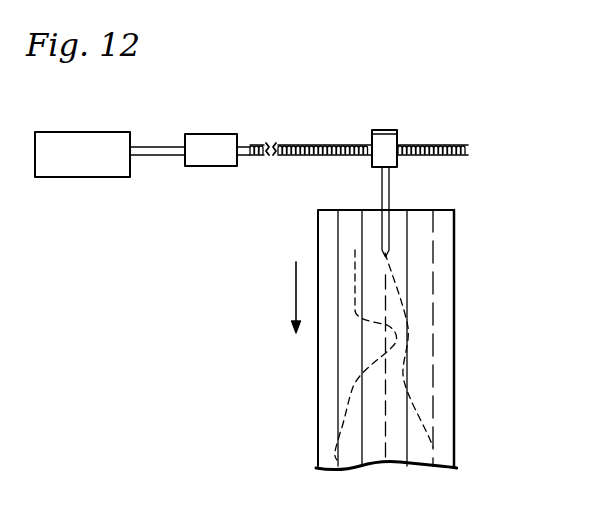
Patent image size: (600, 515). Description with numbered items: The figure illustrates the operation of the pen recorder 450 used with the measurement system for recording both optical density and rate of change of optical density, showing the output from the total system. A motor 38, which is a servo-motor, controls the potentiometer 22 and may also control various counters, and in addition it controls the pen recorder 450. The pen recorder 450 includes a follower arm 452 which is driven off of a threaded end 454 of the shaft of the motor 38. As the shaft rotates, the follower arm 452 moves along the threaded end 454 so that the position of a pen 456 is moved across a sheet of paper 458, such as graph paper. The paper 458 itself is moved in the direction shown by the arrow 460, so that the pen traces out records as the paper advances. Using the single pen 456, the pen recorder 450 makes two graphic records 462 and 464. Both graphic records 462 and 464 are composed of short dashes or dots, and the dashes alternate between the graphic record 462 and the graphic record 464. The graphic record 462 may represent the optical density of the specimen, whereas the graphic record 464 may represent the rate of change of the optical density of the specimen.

The motor 38 is at (102, 132).
The potentiometer 22 is at (218, 134).
The threaded end 454 is at (420, 144).
The follower arm 452 is at (385, 130).
The pen 456 is at (388, 205).
The pen recorder 450 is at (566, 266).
The sheet of paper 458 is at (435, 327).
The graphic record 462 is at (450, 257).
The graphic record 464 is at (355, 255).
The arrow 460 is at (292, 307).